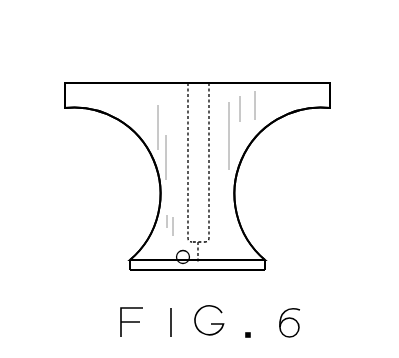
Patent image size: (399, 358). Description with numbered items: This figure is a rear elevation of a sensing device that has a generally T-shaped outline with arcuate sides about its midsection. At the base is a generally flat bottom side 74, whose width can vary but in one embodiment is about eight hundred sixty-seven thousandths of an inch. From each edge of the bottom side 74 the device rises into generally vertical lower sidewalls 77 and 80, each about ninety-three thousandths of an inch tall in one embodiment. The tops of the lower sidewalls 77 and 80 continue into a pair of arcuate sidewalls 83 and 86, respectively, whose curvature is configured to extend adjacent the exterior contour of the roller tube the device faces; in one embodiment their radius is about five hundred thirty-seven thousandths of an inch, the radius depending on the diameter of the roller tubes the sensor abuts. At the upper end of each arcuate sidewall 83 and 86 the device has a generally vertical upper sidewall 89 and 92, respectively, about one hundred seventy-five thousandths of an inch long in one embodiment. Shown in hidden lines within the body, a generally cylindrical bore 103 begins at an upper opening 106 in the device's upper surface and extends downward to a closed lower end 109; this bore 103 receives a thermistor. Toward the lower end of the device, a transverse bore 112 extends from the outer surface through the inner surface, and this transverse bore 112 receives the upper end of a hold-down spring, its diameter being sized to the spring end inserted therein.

The bottom side 74 is at (252, 271).
The lower sidewall 77 is at (130, 265).
The lower sidewall 80 is at (265, 262).
The arcuate sidewall 83 is at (157, 166).
The arcuate sidewall 86 is at (238, 173).
The upper sidewall 89 is at (65, 96).
The upper sidewall 92 is at (331, 97).
The cylindrical bore 103 is at (197, 108).
The upper opening 106 is at (188, 83).
The lower end 109 is at (198, 262).
The transverse bore 112 is at (180, 264).